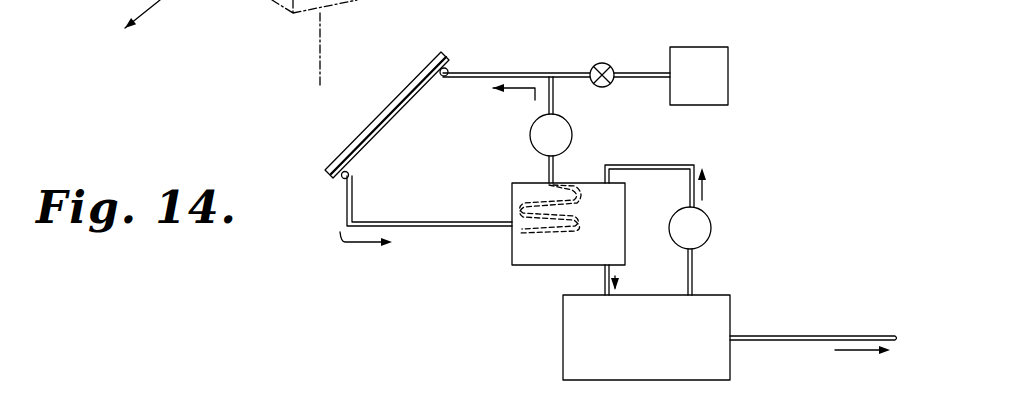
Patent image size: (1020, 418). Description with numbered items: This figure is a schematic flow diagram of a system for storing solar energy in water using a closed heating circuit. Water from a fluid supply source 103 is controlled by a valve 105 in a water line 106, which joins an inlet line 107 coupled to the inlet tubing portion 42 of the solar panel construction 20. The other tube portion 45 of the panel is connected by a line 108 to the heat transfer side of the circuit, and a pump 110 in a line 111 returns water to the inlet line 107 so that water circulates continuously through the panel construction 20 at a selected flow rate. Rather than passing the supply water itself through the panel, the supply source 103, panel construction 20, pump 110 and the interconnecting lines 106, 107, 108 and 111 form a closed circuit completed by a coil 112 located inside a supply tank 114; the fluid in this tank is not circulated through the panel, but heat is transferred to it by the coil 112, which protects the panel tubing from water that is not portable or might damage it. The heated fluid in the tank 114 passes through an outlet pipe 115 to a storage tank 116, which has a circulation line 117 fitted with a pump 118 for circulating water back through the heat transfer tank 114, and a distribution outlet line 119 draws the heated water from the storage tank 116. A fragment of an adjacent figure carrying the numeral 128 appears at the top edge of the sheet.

The solar panel construction 20 is at (337, 153).
The inlet tubing portion 42 is at (445, 76).
The inlet tube portion 45 is at (340, 182).
The fluid supply source 103 is at (722, 75).
The valve 105 is at (597, 63).
The water line 106 is at (648, 73).
The inlet line 107 is at (479, 73).
The line 108 is at (428, 228).
The pump 110 is at (529, 147).
The line 111 is at (554, 101).
The coil 112 is at (572, 202).
The supply tank 114 is at (526, 255).
The outlet pipe 115 is at (605, 281).
The storage tank 116 is at (597, 352).
The circulation line 117 is at (693, 273).
The pump 118 is at (712, 223).
The distribution outlet line 119 is at (857, 295).
The arrow (adjacent figure) 128 is at (200, 0).